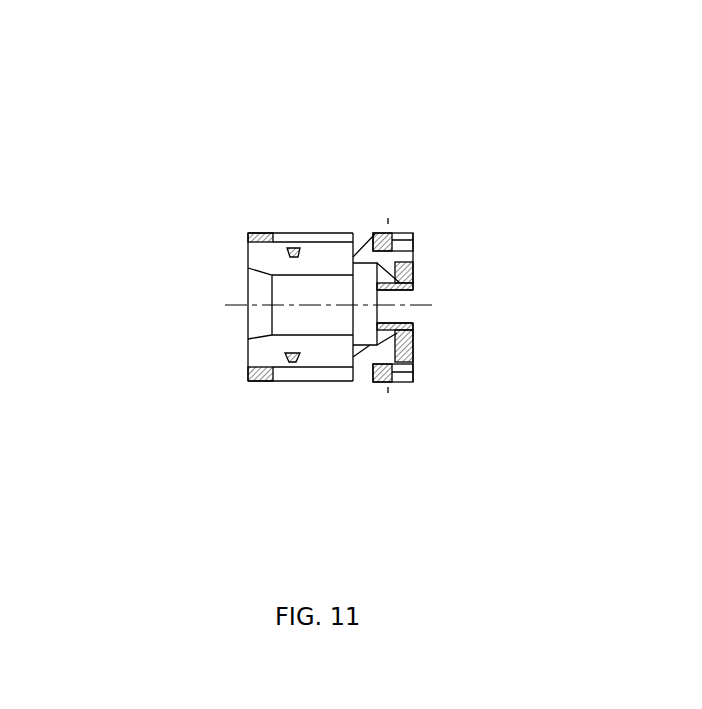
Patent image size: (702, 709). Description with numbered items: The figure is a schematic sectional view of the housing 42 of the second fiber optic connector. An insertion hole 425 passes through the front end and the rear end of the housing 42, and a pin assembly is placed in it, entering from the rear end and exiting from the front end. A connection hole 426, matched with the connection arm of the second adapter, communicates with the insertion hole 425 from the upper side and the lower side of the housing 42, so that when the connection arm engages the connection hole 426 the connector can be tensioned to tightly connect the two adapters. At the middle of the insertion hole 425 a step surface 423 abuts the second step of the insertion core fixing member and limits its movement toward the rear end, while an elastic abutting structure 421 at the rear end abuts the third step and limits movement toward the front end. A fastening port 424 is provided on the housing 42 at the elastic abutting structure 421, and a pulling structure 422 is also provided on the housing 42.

The housing 42 is at (386, 147).
The elastic abutting structure 421 is at (412, 260).
The pulling structure 422 is at (293, 253).
The step surface 423 is at (400, 330).
The fastening port 424 is at (386, 237).
The insertion hole 425 is at (308, 298).
The connection hole 426 is at (313, 237).